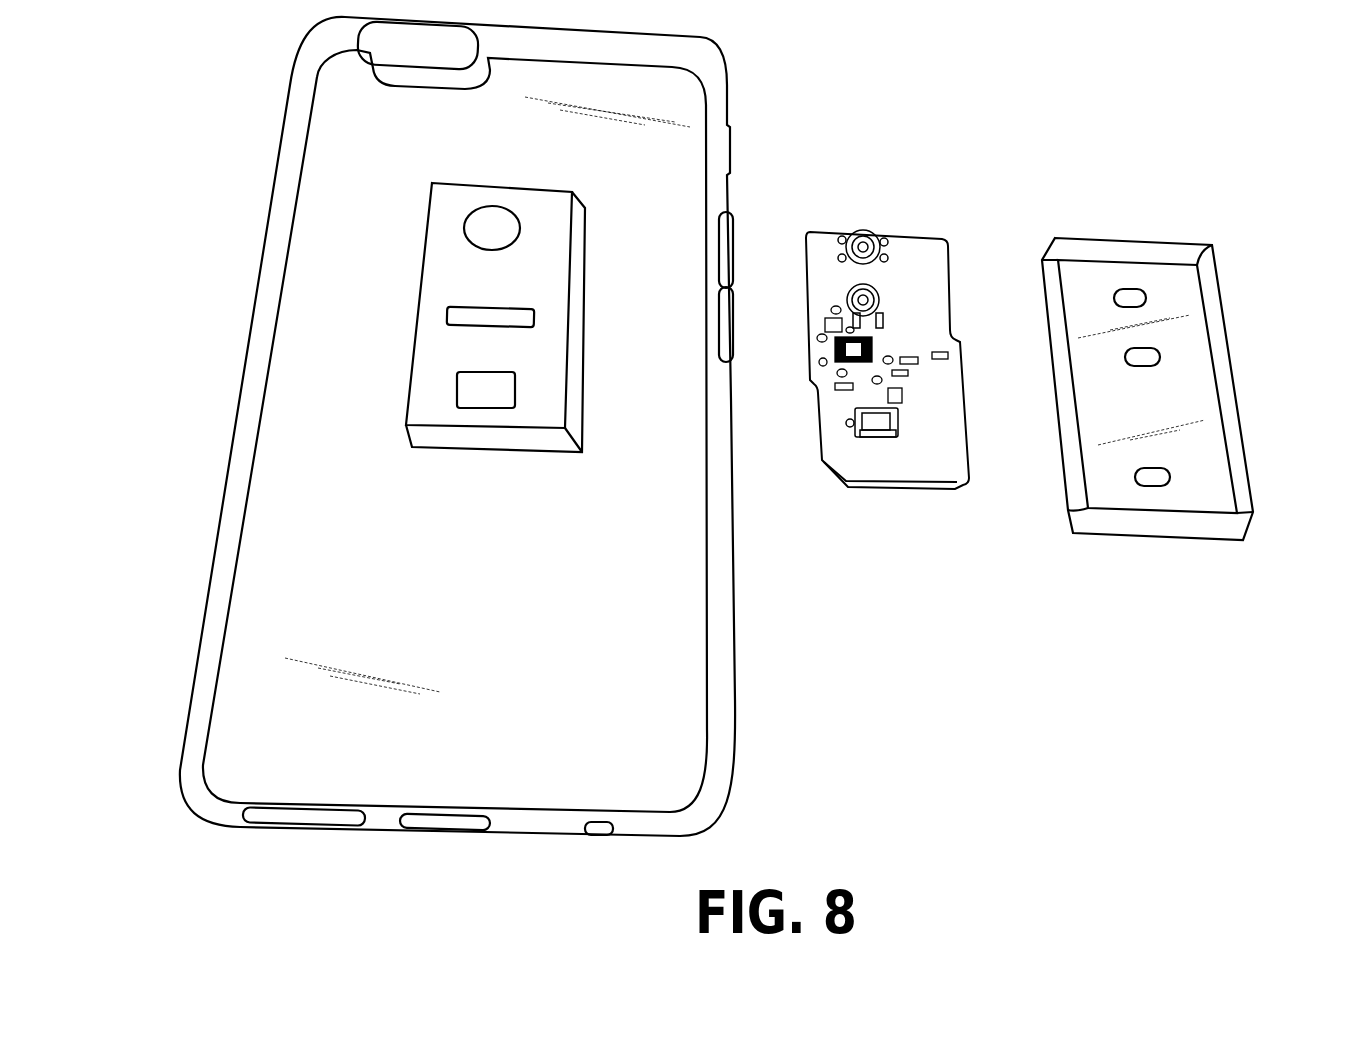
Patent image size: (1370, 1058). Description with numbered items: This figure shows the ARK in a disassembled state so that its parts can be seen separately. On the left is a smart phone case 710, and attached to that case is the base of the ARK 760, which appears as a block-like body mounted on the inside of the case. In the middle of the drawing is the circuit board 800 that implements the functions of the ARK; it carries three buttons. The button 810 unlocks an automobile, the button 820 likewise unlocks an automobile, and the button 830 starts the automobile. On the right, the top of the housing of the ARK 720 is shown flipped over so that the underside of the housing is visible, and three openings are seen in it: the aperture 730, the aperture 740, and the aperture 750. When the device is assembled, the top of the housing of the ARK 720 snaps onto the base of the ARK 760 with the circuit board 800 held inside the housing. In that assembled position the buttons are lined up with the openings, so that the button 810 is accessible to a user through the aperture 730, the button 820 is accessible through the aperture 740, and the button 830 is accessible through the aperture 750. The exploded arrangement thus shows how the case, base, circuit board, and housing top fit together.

The smart phone case 710 is at (272, 148).
The top of the housing of the ARK 720 is at (1105, 235).
The aperture 730 is at (1158, 296).
The aperture 740 is at (1167, 360).
The aperture 750 is at (1181, 478).
The base of the ARK 760 is at (583, 418).
The circuit board 800 is at (829, 229).
The button 810 is at (891, 248).
The button 820 is at (886, 305).
The button 830 is at (902, 421).